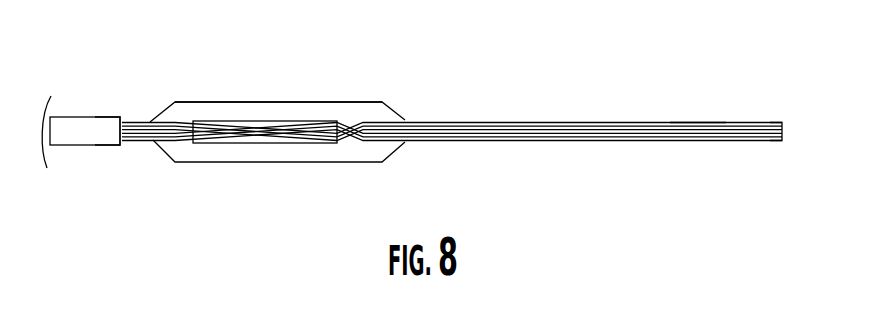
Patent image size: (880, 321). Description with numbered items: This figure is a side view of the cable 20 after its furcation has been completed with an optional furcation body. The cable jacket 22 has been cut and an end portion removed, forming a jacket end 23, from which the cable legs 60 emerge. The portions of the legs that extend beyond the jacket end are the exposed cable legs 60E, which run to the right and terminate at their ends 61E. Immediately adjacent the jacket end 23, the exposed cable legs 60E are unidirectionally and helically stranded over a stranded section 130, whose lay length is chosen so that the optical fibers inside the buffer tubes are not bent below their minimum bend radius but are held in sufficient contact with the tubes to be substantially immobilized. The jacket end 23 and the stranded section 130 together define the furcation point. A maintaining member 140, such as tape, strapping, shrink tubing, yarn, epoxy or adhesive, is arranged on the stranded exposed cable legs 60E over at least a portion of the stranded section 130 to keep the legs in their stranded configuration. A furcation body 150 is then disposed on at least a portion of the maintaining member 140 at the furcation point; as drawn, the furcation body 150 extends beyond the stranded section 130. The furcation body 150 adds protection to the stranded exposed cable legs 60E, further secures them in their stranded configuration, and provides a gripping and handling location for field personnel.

The cable 20 is at (68, 117).
The jacket 22 is at (112, 127).
The jacket end 23 is at (121, 147).
The cable legs 60 is at (136, 122).
The stranded section 130 is at (314, 85).
The maintaining member 140 is at (262, 121).
The furcation body 150 is at (233, 101).
The exposed cable legs 60E is at (673, 122).
The ends 61E is at (795, 125).